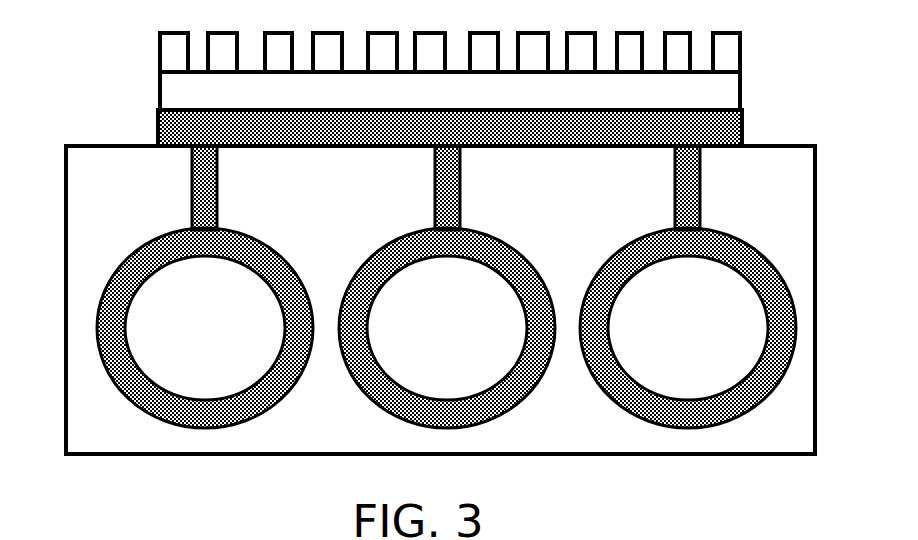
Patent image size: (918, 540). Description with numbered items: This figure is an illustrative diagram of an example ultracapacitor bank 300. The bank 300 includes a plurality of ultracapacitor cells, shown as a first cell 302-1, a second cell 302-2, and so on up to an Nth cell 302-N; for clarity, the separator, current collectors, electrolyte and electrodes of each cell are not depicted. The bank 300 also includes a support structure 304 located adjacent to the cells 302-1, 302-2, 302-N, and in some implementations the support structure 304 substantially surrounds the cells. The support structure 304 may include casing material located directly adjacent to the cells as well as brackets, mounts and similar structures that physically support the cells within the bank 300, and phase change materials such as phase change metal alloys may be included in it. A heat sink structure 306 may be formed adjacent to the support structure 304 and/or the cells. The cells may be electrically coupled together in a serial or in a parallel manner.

The ultracapacitor bank 300 is at (152, 463).
The ultracapacitor cell 302-1 is at (168, 379).
The ultracapacitor cell 302-2 is at (412, 379).
The ultracapacitor cell 302-N is at (651, 379).
The support structure 304 is at (672, 176).
The heat sink structure 306 is at (157, 72).